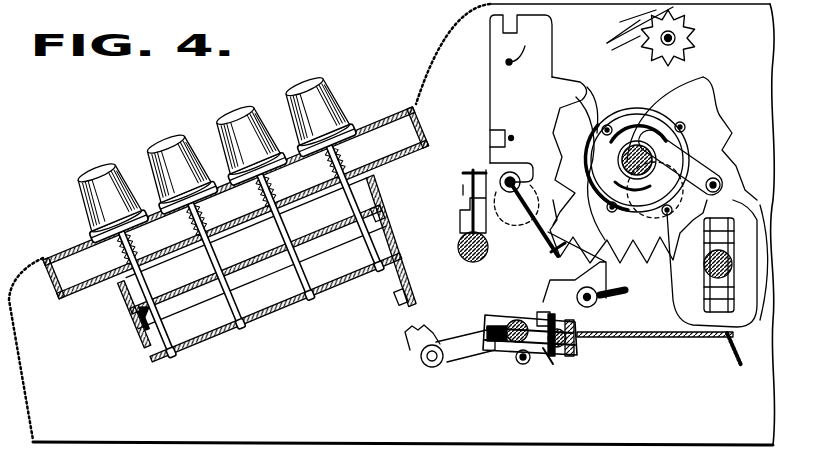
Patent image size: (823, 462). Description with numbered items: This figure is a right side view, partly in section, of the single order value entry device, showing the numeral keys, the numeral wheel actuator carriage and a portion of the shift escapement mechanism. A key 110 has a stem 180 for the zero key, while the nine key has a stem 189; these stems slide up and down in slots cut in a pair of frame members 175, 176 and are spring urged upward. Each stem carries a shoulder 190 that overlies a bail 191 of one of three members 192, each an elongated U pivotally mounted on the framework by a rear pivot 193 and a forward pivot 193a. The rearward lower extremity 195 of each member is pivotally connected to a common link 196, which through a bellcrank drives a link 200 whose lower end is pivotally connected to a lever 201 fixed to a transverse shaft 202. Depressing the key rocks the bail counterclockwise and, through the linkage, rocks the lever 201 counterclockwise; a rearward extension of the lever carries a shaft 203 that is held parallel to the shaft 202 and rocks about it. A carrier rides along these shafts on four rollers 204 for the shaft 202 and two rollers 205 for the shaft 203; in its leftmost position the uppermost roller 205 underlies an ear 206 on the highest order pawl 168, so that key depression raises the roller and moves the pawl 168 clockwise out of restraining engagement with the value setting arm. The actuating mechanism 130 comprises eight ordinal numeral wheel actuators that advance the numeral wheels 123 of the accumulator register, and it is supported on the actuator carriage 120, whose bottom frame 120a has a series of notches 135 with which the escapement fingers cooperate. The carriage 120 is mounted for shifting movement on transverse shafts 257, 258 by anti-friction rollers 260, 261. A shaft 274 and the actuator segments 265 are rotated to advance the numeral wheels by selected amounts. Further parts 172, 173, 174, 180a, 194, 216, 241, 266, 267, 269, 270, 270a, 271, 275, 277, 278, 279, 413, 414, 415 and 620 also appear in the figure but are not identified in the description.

The key 110 is at (104, 190).
The actuator carriage 120 is at (651, 352).
The bottom frame of actuator carriage 120a is at (668, 333).
The numeral wheels 123 is at (628, 18).
The actuating mechanism 130 is at (716, 116).
The notches 135 is at (580, 340).
The highest order pawl 168 is at (608, 280).
The cam follower 172 is at (558, 162).
The pivot pin 173 is at (606, 302).
The connecting rod 174 is at (600, 262).
The frame member 175 is at (70, 304).
The frame member 176 is at (286, 308).
The key stem 180 is at (160, 338).
The shaft end 180a is at (176, 352).
The key stem 189 is at (381, 275).
The shoulder 190 is at (126, 278).
The bail 191 is at (266, 250).
The member 192 is at (388, 218).
The pivot 193 is at (366, 236).
The pivot 193a is at (148, 312).
The pin 194 is at (146, 322).
The rearward lower extremity 195 is at (408, 280).
The common link 196 is at (396, 300).
The link 200 is at (408, 345).
The lever 201 is at (436, 367).
The transverse shaft 202 is at (500, 314).
The shaft 203 is at (566, 356).
The rollers 204 is at (520, 362).
The rollers 205 is at (570, 310).
The ear 206 is at (543, 312).
The hub 216 is at (634, 172).
The stop pin 241 is at (522, 51).
The transverse shaft 257 is at (458, 250).
The transverse shaft 258 is at (728, 206).
The anti-friction rollers 260 is at (468, 222).
The anti-friction rollers 261 is at (720, 206).
The actuator segments 265 is at (521, 198).
The slider housing 266 is at (706, 178).
The lever 267 is at (712, 142).
The rivet 269 is at (640, 147).
The cam disc 270 is at (694, 120).
The cam disc arm 270a is at (668, 120).
The lever arm 271 is at (692, 100).
The shaft 274 is at (576, 116).
The ratchet wheel 275 is at (648, 240).
The cam surface 277 is at (576, 97).
The cam surface 278 is at (568, 138).
The link 279 is at (610, 127).
The gear 413 is at (690, 26).
The bracket 414 is at (490, 138).
The mounting plate 415 is at (490, 78).
The link 620 is at (622, 30).